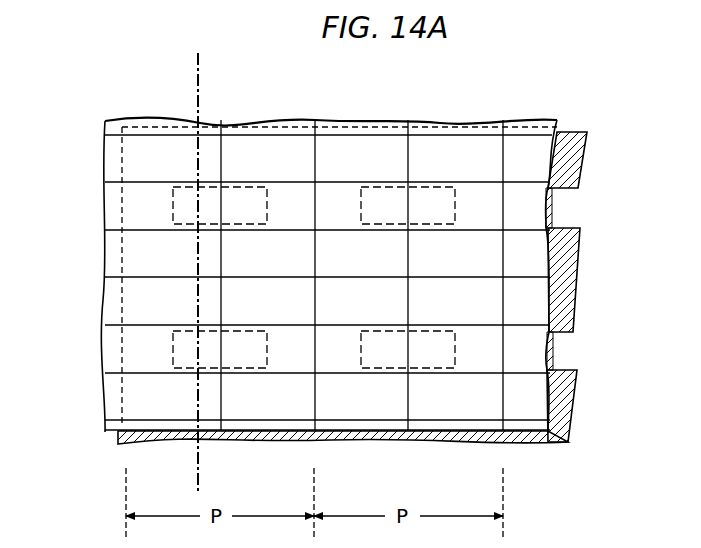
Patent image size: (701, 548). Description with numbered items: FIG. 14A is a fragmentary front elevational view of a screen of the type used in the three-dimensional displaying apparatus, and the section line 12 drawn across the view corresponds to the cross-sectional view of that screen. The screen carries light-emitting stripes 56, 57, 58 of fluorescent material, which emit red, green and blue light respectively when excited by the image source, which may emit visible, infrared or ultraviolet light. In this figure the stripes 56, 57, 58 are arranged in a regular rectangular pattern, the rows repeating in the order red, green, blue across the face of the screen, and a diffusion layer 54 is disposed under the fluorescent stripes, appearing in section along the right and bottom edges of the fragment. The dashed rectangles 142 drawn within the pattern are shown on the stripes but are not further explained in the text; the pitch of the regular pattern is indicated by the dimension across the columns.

The diffusion layer 54 is at (585, 152).
The fluorescent stripe 56 is at (178, 145).
The fluorescent stripe 57 is at (255, 145).
The fluorescent stripe 58 is at (545, 265).
The stiffening pads 142 is at (428, 190).
The section line 12- 12 is at (198, 53).